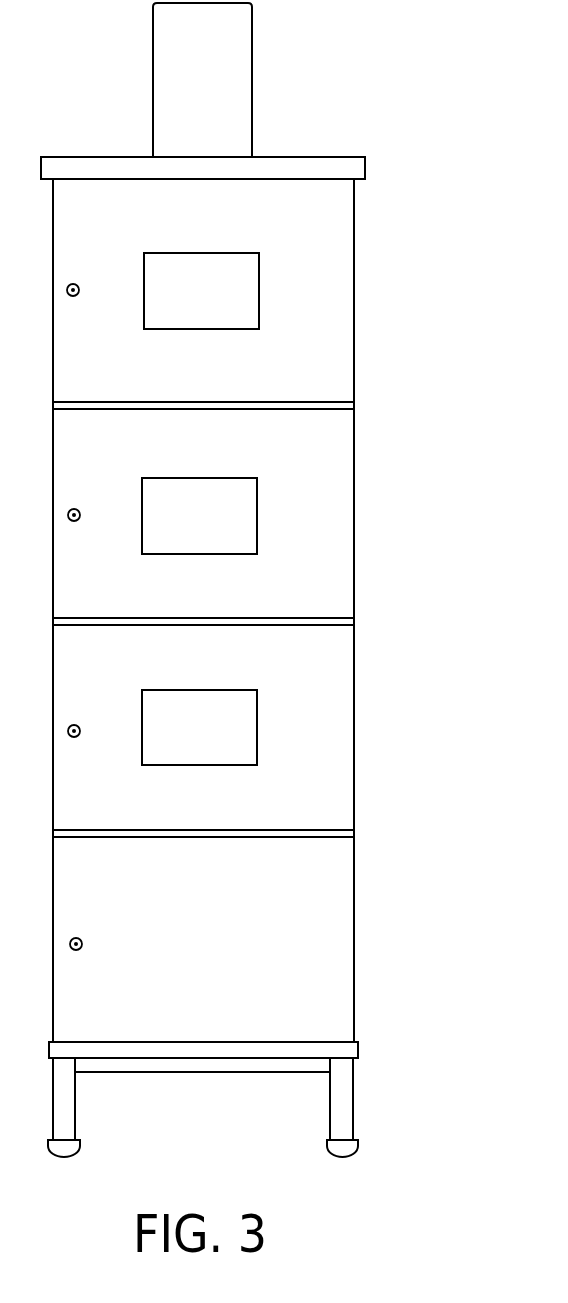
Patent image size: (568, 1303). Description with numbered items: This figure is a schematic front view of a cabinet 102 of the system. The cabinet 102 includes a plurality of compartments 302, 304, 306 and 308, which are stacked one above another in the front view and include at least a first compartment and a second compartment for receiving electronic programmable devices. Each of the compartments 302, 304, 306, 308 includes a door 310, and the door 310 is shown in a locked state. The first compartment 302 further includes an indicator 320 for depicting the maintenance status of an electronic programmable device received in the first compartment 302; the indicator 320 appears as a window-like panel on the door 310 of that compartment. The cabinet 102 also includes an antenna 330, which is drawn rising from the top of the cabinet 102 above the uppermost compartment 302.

The locker system 102 is at (355, 119).
The display kiosk 330 is at (223, 96).
The first compartment 302 is at (327, 291).
The second compartment 304 is at (320, 536).
The third compartment 306 is at (320, 733).
The fourth compartment 308 is at (318, 936).
The door 310 is at (219, 380).
The window 320 is at (219, 308).